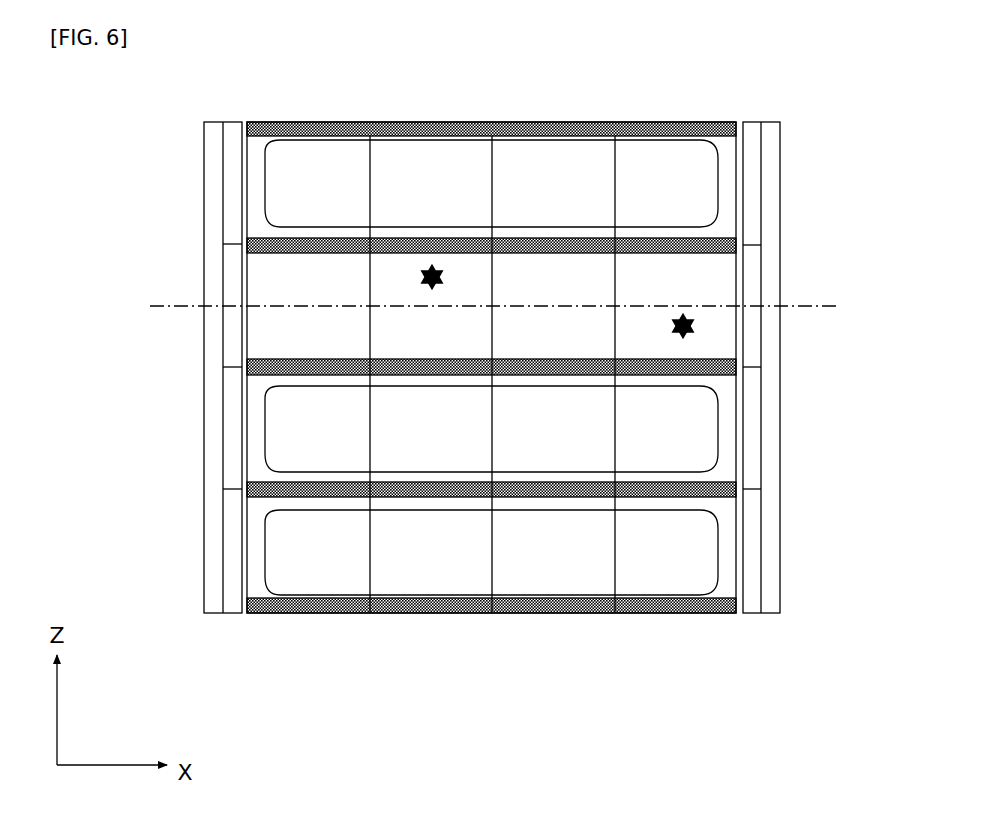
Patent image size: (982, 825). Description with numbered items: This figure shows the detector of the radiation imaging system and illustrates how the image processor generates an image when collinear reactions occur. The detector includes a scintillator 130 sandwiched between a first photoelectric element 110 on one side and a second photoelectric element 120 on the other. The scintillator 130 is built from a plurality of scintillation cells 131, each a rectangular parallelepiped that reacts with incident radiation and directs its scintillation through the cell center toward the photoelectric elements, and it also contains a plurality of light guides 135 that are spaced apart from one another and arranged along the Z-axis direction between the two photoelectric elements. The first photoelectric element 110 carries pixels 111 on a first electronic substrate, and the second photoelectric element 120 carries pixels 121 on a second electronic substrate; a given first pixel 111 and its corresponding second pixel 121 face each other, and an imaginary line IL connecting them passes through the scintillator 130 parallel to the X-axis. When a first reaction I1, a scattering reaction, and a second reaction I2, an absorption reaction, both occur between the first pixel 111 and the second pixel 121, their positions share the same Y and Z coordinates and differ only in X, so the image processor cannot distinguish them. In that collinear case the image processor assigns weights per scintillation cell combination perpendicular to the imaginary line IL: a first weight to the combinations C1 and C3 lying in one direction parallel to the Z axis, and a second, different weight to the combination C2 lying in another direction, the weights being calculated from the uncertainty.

The first photoelectric element 110 is at (213, 156).
The pixel 111 is at (232, 262).
The second photoelectric element 120 is at (773, 154).
The pixel 121 is at (752, 264).
The scintillator 130 is at (683, 632).
The scintillation cell 131 is at (437, 338).
The light guide 135 is at (300, 128).
The scintillation cell combination C1 is at (585, 470).
The scintillation cell combination C2 is at (565, 135).
The scintillation cell combination C3 is at (321, 596).
The first reaction I1 is at (437, 263).
The second reaction I2 is at (695, 330).
The imaginary line IL is at (826, 308).